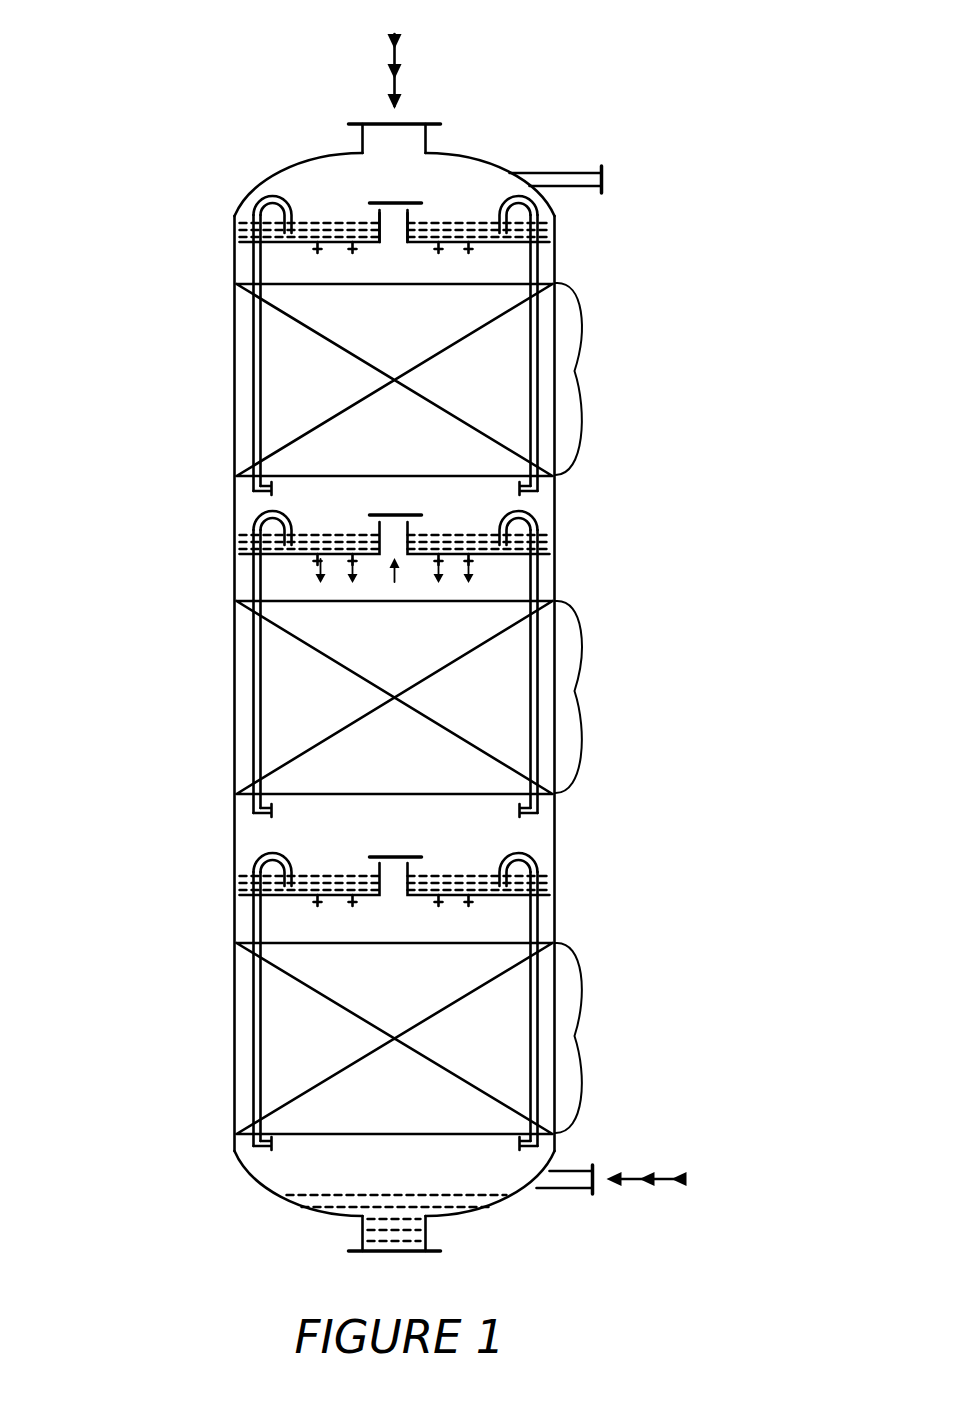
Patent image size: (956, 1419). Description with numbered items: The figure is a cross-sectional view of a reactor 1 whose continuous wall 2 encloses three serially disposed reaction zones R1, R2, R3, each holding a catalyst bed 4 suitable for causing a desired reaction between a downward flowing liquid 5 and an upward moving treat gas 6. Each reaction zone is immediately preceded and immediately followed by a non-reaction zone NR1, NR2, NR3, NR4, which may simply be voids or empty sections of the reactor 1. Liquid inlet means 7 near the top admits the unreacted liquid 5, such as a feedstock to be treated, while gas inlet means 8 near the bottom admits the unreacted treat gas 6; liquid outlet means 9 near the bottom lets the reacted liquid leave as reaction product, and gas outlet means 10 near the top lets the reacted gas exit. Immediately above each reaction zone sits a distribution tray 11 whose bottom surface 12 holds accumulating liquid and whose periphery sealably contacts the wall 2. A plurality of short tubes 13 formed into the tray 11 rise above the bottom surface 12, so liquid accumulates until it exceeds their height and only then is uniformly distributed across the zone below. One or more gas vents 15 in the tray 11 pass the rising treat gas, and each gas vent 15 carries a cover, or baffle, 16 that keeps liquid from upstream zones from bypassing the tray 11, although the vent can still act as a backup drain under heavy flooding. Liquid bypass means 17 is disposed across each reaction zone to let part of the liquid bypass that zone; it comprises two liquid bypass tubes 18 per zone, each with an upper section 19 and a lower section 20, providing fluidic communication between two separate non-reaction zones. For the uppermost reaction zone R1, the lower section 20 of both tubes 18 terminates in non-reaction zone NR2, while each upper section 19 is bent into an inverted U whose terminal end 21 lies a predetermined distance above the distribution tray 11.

The reactor 1 is at (268, 78).
The continuous wall 2 is at (235, 512).
The catalyst bed 4 is at (288, 374).
The liquid 5 is at (407, 52).
The treat gas 6 is at (642, 1193).
The liquid inlet means 7 is at (352, 143).
The gas inlet means 8 is at (579, 1148).
The liquid outlet means 9 is at (350, 1230).
The gas outlet means 10 is at (568, 190).
The distribution tray 11 is at (546, 243).
The bottom surface 12 is at (427, 243).
The short tubes 13 is at (355, 230).
The gas vent 15 is at (420, 220).
The cover 16 is at (390, 202).
The liquid bypass means 17 is at (208, 208).
The liquid bypass tube 18 is at (258, 327).
The upper section 19 is at (240, 230).
The lower section 20 is at (252, 472).
The terminal end 21 is at (290, 233).
The non-reaction zone NR1 is at (482, 173).
The non-reaction zone NR2 is at (545, 500).
The non-reaction zone NR3 is at (535, 840).
The non-reaction zone NR4 is at (478, 1175).
The reaction zone R1 is at (577, 370).
The reaction zone R2 is at (577, 690).
The reaction zone R3 is at (577, 1035).